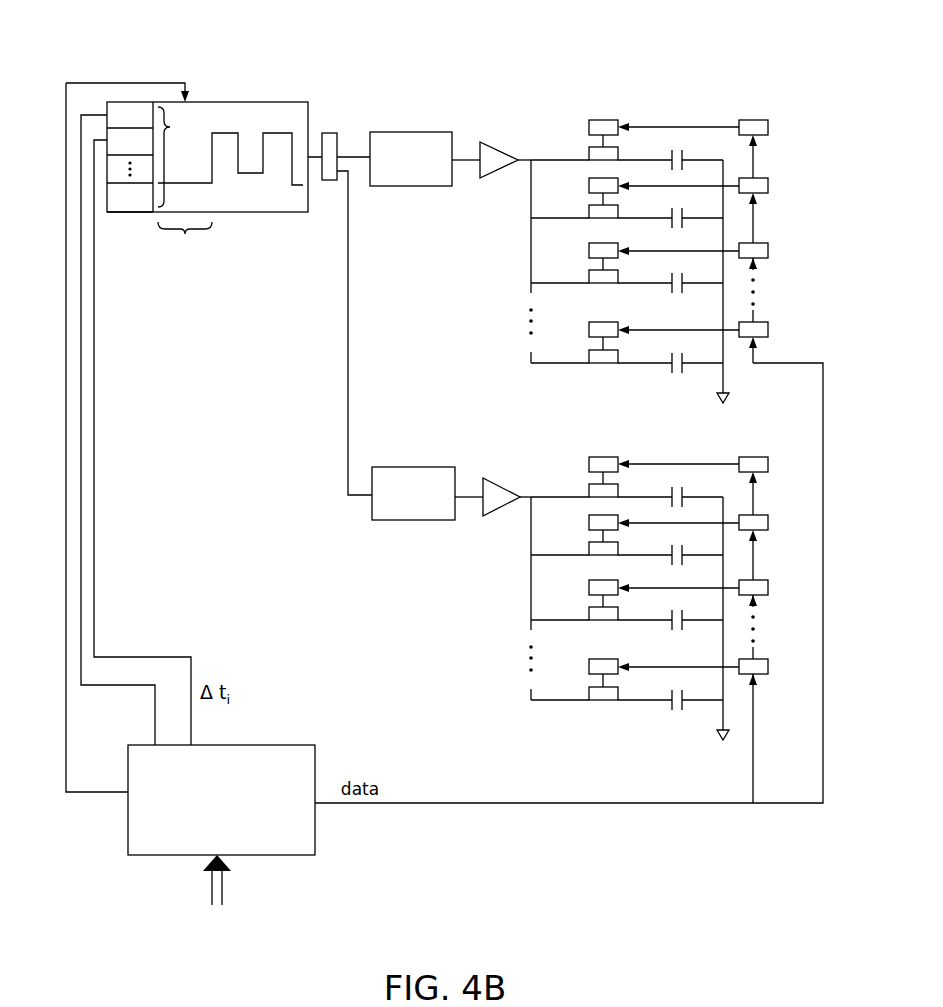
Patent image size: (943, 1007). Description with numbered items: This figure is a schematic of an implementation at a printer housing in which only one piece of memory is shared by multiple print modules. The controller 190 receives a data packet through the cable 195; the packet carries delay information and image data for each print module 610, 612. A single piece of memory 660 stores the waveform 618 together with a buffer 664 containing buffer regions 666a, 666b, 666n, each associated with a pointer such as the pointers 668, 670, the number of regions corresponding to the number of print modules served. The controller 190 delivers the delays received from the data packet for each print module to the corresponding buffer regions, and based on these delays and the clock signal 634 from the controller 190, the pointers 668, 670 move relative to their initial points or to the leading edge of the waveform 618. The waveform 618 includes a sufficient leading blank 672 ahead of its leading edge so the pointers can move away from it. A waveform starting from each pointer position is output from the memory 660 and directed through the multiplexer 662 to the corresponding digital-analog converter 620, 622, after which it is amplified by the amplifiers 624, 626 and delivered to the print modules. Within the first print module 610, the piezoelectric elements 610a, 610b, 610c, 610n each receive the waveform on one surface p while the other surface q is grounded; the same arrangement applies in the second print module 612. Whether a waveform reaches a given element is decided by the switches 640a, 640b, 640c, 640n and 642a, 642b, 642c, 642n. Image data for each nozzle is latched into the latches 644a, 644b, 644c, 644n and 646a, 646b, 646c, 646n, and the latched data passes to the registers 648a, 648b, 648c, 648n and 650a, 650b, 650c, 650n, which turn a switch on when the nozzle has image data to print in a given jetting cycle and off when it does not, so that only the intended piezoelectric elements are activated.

The controller 190 is at (221, 800).
The cable 195 is at (222, 889).
The print module 610 is at (670, 91).
The print module 612 is at (652, 437).
The piezoelectric element 610a is at (685, 152).
The piezoelectric element 610b is at (685, 210).
The piezoelectric element 610c is at (685, 275).
The piezoelectric element 610n is at (685, 355).
The waveform 618 is at (292, 145).
The digital-analog converter 620 is at (415, 132).
The digital-analog converter 622 is at (415, 467).
The amplifier 624 is at (497, 142).
The amplifier 626 is at (500, 478).
The clock signal 634 is at (66, 475).
The switch 640a is at (590, 150).
The switch 640b is at (590, 213).
The switch 640c is at (590, 273).
The switch 640n is at (590, 352).
The switch 642a is at (590, 487).
The switch 642b is at (590, 550).
The switch 642c is at (590, 610).
The switch 642n is at (590, 689).
The latch 644a is at (768, 120).
The latch 644b is at (768, 178).
The latch 644c is at (768, 243).
The latch 644n is at (768, 322).
The latch 646a is at (768, 457).
The latch 646b is at (768, 515).
The latch 646c is at (768, 580).
The latch 646n is at (768, 659).
The register 648a is at (590, 120).
The register 648b is at (590, 180).
The register 648c is at (590, 245).
The register 648n is at (590, 322).
The register 650a is at (590, 457).
The register 650b is at (590, 517).
The register 650c is at (590, 582).
The register 650n is at (590, 659).
The memory 660 is at (308, 102).
The multiplexer 662 is at (333, 181).
The buffer 664 is at (182, 157).
The buffer region 666a is at (130, 117).
The buffer region 666b is at (130, 144).
The buffer region 666n is at (130, 200).
The pointer 668 is at (222, 121).
The pointer 670 is at (247, 134).
The leading blank 672 is at (185, 239).